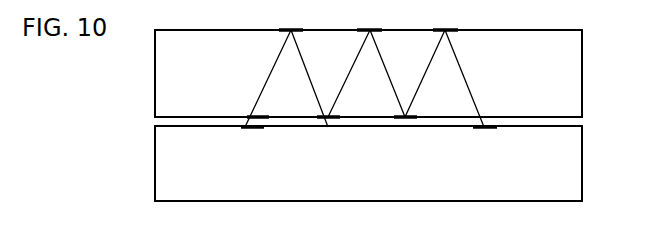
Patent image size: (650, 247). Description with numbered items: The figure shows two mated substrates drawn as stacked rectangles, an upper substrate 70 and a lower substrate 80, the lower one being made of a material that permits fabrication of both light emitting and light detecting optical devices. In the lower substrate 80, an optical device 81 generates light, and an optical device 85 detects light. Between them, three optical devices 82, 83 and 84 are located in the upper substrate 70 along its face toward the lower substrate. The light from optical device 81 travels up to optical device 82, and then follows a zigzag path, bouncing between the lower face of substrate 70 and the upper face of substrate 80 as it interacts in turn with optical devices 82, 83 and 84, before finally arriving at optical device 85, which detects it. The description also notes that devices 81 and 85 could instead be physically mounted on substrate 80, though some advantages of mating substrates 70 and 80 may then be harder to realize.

The substrate 70 is at (582, 80).
The substrate 80 is at (582, 163).
The optical device 81 is at (248, 127).
The optical device 82 is at (297, 30).
The optical device 83 is at (376, 30).
The optical device 84 is at (452, 30).
The optical device 85 is at (478, 127).